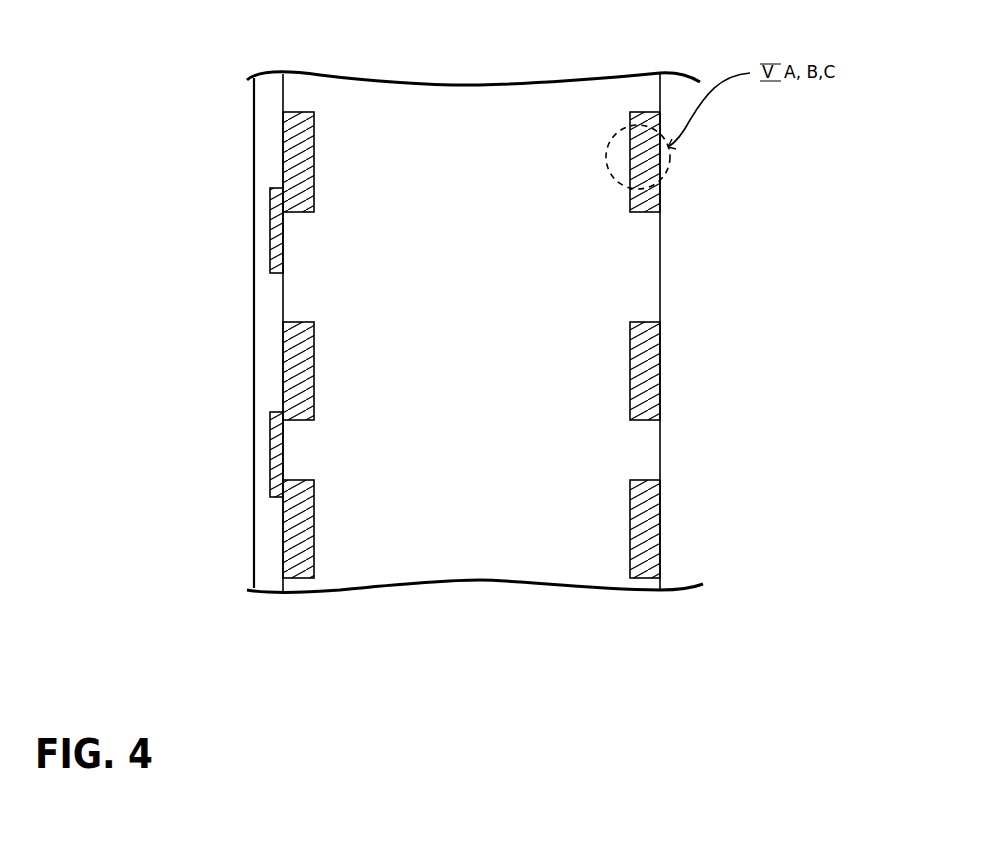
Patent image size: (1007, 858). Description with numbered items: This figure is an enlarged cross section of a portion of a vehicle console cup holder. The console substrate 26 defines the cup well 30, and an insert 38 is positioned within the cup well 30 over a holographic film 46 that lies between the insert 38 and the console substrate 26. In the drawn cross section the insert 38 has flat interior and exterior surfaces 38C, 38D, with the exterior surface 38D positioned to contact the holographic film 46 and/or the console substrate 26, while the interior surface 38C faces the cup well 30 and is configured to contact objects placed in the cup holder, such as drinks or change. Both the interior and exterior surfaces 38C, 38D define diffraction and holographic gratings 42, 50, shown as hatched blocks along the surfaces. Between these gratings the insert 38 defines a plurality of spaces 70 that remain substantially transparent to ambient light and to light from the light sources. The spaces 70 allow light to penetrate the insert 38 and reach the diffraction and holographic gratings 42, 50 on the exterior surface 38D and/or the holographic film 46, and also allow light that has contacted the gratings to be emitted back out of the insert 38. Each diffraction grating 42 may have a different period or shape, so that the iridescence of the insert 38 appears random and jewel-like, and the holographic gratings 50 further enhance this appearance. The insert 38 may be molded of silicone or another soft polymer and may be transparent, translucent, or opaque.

The console substrate 26 is at (226, 465).
The cup well 30 is at (717, 425).
The insert 38 is at (587, 448).
The interior surface 38C is at (660, 280).
The exterior surface 38D is at (282, 302).
The diffraction grating 42 is at (313, 333).
The holographic film 46 is at (268, 118).
The holographic grating 50 is at (278, 222).
The spaces 70 is at (280, 315).